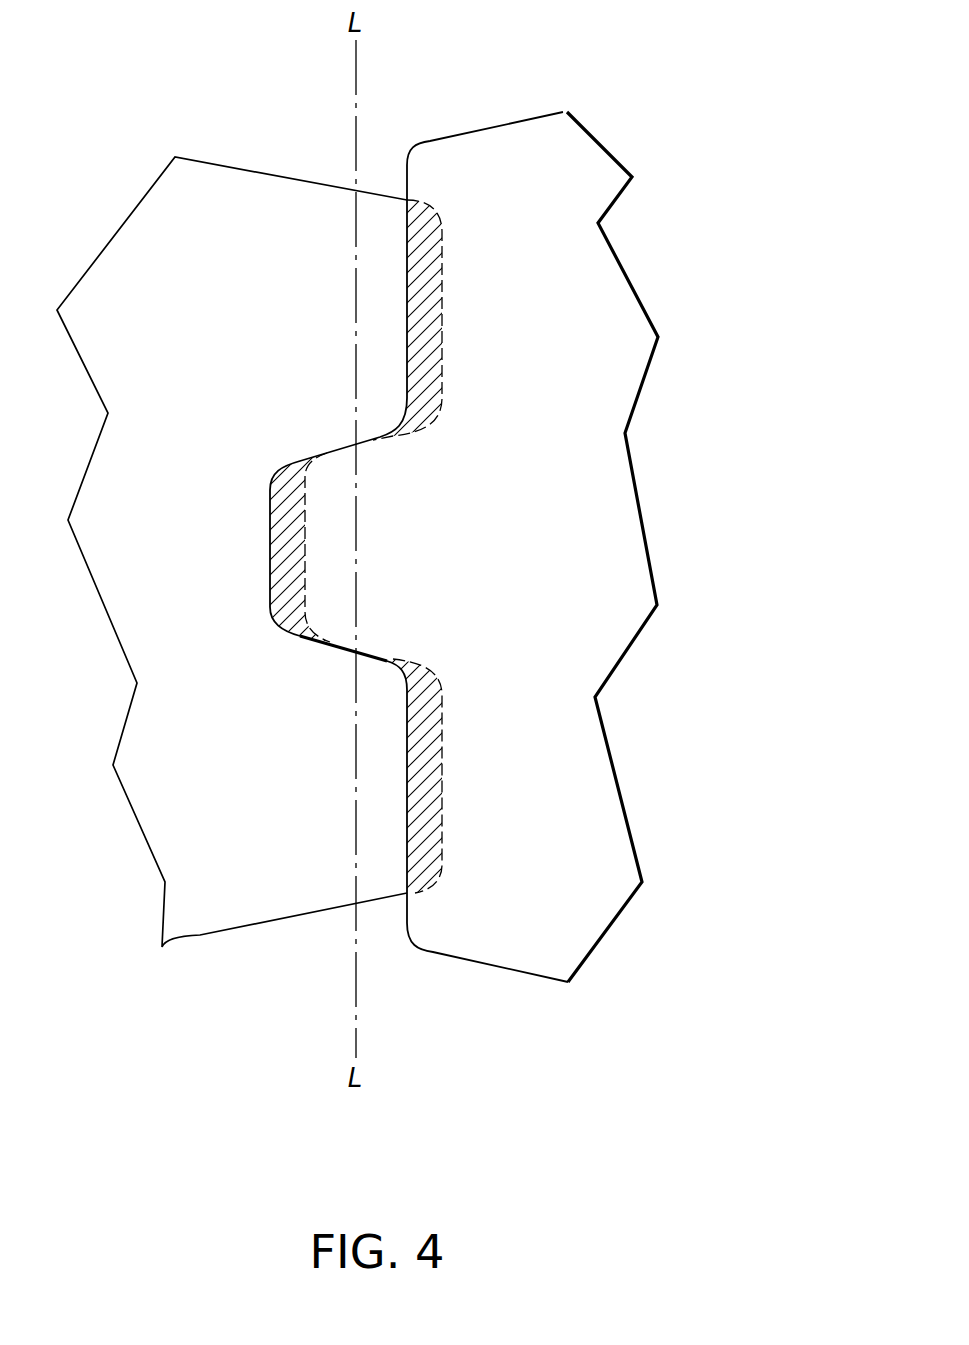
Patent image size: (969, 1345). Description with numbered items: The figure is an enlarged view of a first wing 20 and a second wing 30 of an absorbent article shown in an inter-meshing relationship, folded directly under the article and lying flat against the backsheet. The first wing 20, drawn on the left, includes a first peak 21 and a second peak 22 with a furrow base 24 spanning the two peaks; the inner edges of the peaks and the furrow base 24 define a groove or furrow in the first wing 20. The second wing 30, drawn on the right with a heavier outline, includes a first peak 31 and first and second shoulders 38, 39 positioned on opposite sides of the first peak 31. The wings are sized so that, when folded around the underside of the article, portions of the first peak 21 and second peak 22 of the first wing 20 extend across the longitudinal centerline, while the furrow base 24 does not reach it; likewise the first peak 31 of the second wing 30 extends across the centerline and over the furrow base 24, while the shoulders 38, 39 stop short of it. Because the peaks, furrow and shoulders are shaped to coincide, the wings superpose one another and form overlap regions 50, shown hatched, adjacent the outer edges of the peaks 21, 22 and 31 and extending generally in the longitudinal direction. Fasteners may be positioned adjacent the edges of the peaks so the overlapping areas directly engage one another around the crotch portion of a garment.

The first wing 20 is at (230, 390).
The second wing 30 is at (488, 536).
The first peak 21 is at (442, 300).
The second peak 22 is at (442, 778).
The furrow base 24 is at (305, 553).
The first peak 31 is at (270, 577).
The first shoulder 38 is at (405, 309).
The second shoulder 39 is at (407, 793).
The overlap region 50 is at (423, 362).